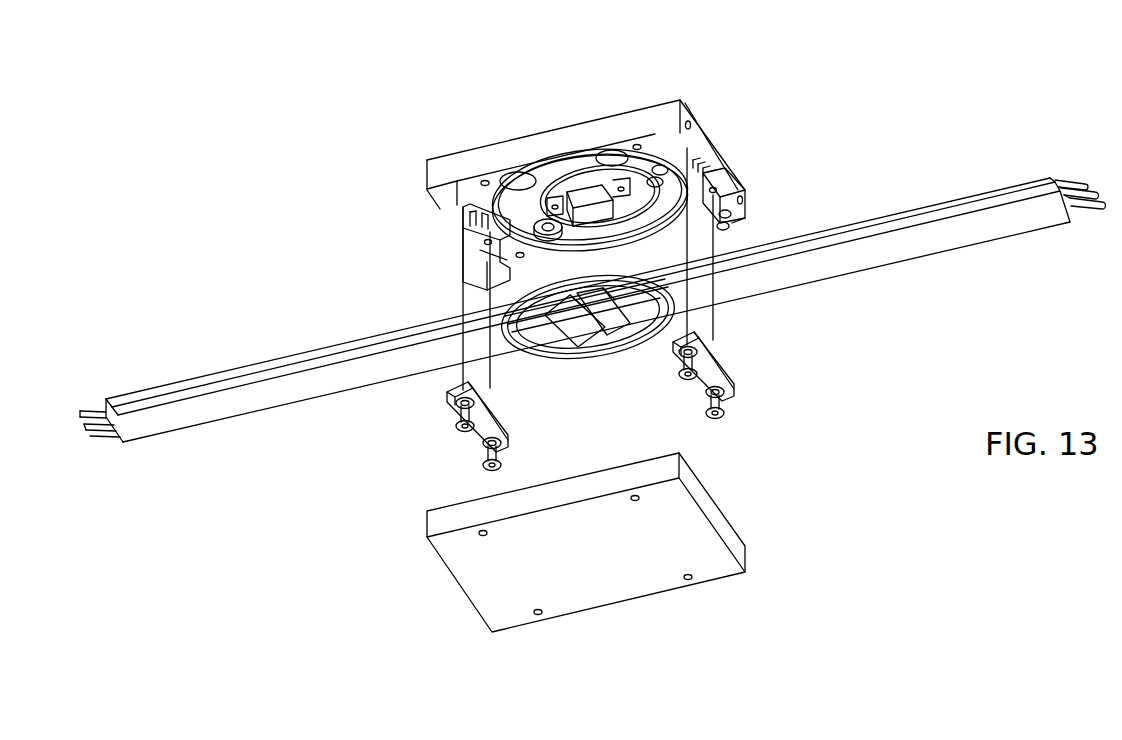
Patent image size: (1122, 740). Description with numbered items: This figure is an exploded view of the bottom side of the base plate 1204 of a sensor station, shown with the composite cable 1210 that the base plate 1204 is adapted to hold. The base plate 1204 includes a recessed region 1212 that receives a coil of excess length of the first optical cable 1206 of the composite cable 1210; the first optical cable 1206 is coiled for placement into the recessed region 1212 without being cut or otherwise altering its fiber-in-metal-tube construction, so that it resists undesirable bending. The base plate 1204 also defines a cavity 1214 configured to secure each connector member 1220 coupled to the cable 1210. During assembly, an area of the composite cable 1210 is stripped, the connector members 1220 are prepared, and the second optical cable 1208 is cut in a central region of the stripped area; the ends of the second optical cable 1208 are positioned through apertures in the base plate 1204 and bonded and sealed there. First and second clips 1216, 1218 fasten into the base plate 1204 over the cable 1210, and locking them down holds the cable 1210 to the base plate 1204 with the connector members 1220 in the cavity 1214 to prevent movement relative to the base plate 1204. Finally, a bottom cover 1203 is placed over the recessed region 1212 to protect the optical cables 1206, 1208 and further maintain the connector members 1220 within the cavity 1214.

The bottom cover 1203 is at (713, 513).
The base plate 1204 is at (645, 120).
The first optical cable 1206 is at (537, 357).
The second optical cable 1208 is at (507, 308).
The composite cable 1210 is at (252, 397).
The recessed region 1212 is at (637, 230).
The cavity 1214 is at (563, 190).
The first clip 1216 is at (475, 432).
The second clip 1218 is at (710, 375).
The connector member 1220 is at (590, 338).